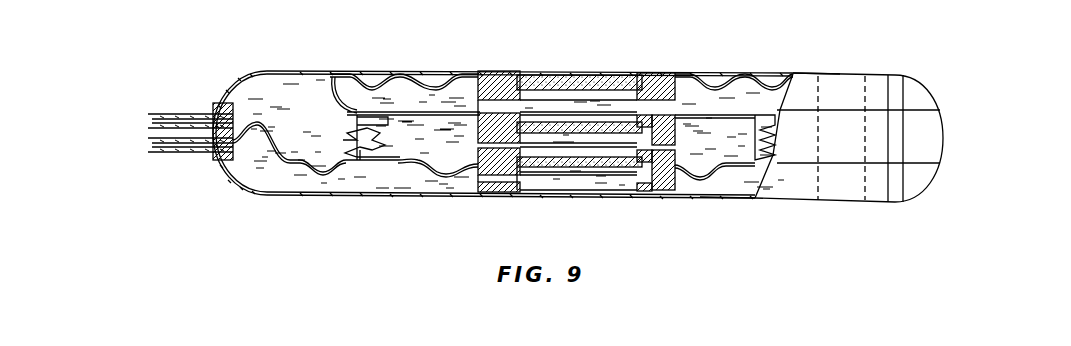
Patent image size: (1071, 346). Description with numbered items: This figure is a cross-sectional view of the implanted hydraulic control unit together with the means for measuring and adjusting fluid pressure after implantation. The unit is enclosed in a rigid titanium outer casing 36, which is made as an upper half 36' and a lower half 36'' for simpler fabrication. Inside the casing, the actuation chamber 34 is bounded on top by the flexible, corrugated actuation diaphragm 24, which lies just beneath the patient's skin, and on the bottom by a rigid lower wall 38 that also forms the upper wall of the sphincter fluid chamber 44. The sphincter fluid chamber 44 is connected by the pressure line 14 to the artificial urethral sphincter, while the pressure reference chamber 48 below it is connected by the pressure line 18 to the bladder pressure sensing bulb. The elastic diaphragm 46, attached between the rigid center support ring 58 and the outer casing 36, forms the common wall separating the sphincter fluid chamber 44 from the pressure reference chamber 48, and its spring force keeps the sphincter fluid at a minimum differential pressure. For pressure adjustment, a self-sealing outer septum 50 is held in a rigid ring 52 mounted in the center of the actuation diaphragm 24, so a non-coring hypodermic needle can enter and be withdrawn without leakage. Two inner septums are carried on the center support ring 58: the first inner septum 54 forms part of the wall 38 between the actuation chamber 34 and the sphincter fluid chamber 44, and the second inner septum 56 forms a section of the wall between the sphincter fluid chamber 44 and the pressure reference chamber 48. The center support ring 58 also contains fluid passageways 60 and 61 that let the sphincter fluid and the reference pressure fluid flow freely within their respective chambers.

The pressure line 14 is at (148, 112).
The pressure line 18 is at (152, 155).
The flexible actuation diaphragm 24 is at (753, 72).
The actuation chamber 34 is at (408, 92).
The outer casing 36 is at (849, 184).
The upper half of outer casing 36' is at (841, 59).
The lower half of outer casing 36'' is at (732, 219).
The lower wall of actuation chamber 38 is at (757, 112).
The sphincter fluid chamber 44 is at (271, 100).
The elastic diaphragm 46 is at (287, 162).
The pressure reference chamber 48 is at (392, 180).
The outer septum 50 is at (602, 78).
The rigid ring 52 is at (663, 73).
The first inner septum 54 is at (605, 137).
The second inner septum 56 is at (603, 170).
The rigid center support ring 58 is at (518, 173).
The fluid passageway 60 is at (678, 140).
The fluid passageway 61 is at (493, 185).